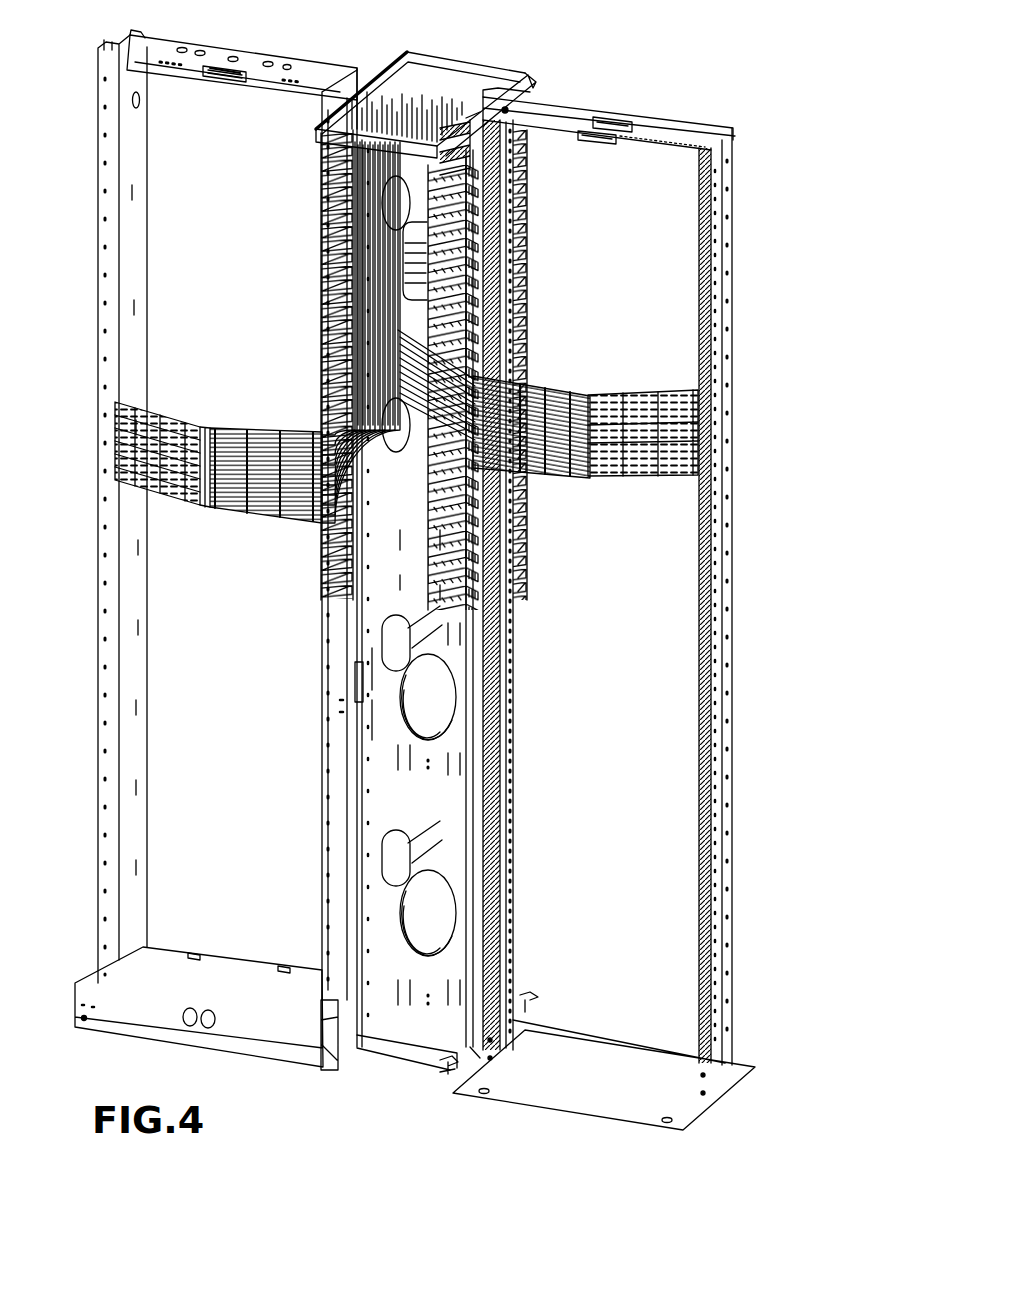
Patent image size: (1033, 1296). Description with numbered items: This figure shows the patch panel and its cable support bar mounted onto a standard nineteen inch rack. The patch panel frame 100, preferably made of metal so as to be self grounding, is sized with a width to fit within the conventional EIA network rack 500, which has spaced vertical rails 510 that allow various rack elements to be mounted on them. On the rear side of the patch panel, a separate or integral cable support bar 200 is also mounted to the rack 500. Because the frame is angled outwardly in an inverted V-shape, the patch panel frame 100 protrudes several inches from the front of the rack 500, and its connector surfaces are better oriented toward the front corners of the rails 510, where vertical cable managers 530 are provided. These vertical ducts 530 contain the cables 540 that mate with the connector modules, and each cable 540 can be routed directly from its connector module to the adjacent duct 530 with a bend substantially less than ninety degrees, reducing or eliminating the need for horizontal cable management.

The patch panel frame 100 is at (551, 793).
The cable support bar 200 is at (565, 337).
The rack 500 is at (652, 105).
The vertical rails 510 is at (503, 580).
The vertical cable manager 530 is at (463, 603).
The cables 540 is at (533, 470).